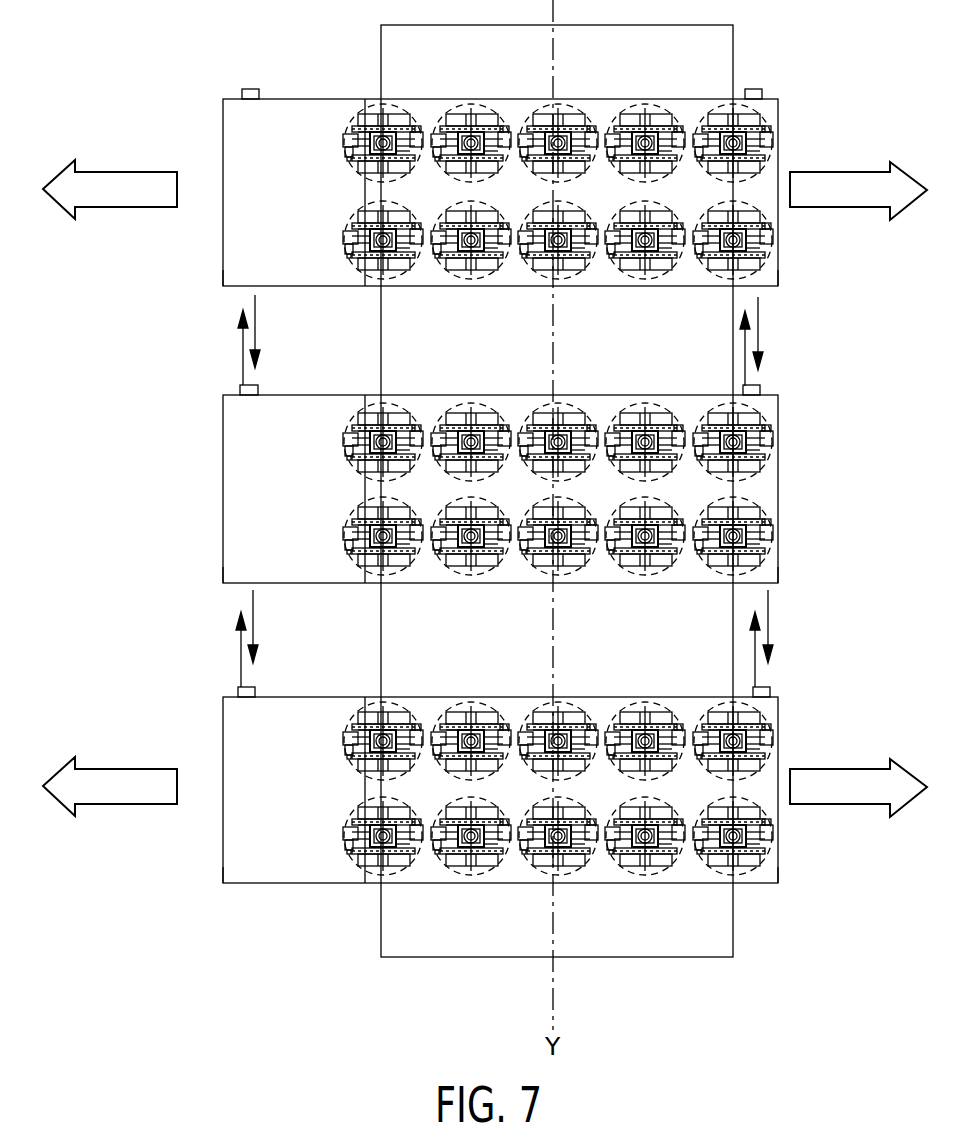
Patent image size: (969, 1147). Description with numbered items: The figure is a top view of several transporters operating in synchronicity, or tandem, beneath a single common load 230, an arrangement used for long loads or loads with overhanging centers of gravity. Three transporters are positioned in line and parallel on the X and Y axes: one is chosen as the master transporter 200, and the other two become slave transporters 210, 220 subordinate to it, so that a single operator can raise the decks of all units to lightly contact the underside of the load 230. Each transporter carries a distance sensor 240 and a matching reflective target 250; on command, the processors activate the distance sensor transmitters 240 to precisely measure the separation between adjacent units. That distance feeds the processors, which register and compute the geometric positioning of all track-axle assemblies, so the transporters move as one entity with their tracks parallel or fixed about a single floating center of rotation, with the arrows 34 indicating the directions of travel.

The direction of vertical movement 34 is at (255, 300).
The master transporter 200 is at (778, 475).
The slave transporter 210 is at (778, 131).
The slave transporter 220 is at (778, 712).
The load 230 is at (672, 958).
The distance sensor 240 is at (250, 88).
The reflective target 250 is at (223, 286).